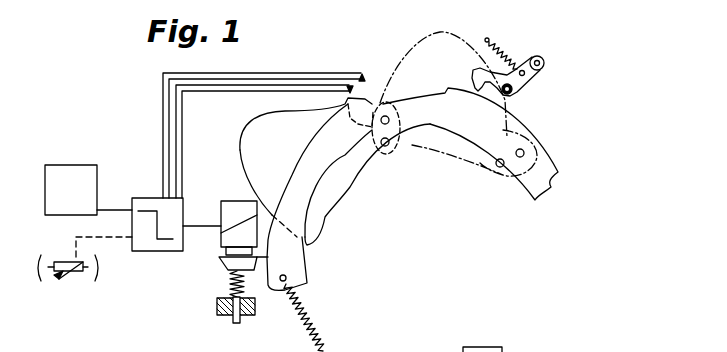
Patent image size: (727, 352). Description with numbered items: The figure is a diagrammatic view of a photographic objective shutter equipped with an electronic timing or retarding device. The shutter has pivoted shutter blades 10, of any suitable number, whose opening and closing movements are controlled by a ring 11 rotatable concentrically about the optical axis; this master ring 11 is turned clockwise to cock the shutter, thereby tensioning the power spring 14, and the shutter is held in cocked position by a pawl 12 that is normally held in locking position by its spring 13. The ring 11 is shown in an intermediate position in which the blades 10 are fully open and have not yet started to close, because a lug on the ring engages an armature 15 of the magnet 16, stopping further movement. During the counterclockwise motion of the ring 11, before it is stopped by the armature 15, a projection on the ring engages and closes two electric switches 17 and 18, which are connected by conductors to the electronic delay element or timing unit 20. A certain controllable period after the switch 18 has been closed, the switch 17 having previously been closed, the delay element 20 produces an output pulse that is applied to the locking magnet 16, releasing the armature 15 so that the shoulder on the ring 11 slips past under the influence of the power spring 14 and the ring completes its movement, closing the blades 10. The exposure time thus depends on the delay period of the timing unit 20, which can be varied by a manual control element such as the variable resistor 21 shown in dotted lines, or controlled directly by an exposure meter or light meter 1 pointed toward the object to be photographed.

The exposure meter 1 is at (62, 165).
The shutter blades 10 is at (412, 145).
The ring 11 is at (545, 148).
The pawl 12 is at (527, 85).
The spring 13 is at (506, 55).
The power spring 14 is at (320, 335).
The armature 15 is at (225, 265).
The magnet 16 is at (232, 200).
The electric switch 17 is at (362, 98).
The electric switch 18 is at (350, 92).
The electronic delay element 20 is at (146, 197).
The variable resistor 21 is at (76, 269).